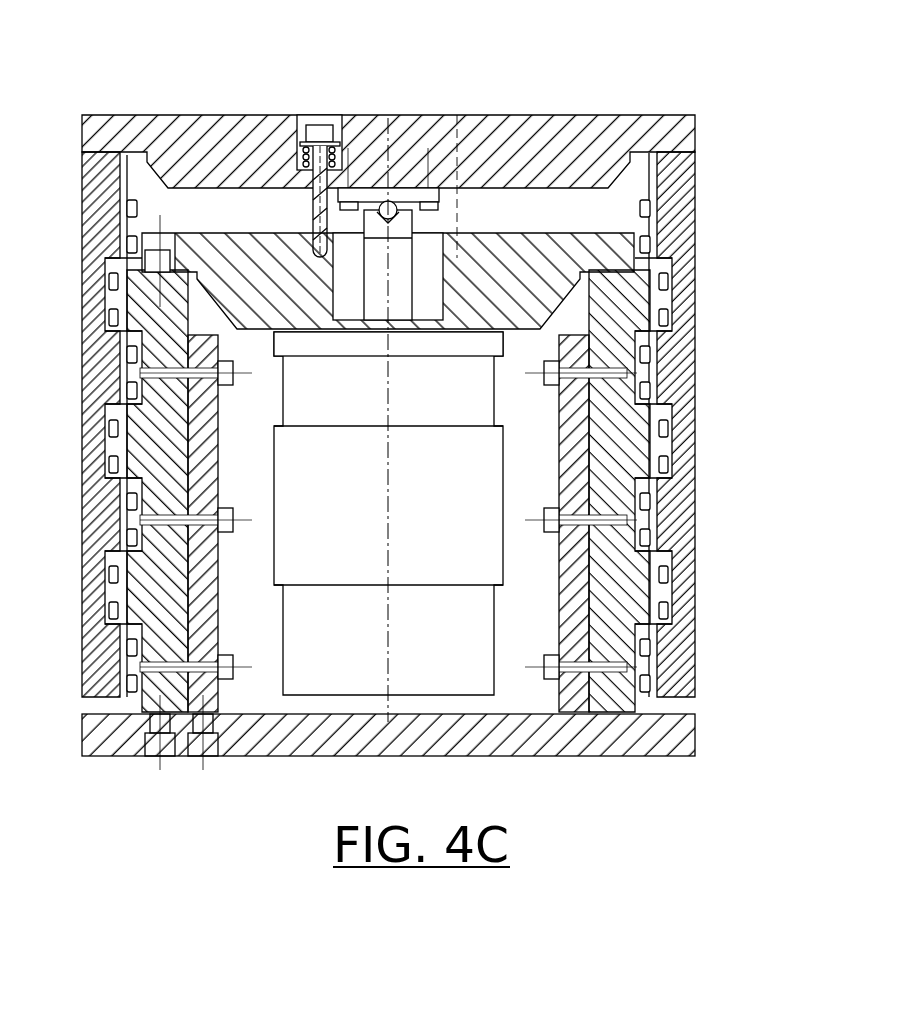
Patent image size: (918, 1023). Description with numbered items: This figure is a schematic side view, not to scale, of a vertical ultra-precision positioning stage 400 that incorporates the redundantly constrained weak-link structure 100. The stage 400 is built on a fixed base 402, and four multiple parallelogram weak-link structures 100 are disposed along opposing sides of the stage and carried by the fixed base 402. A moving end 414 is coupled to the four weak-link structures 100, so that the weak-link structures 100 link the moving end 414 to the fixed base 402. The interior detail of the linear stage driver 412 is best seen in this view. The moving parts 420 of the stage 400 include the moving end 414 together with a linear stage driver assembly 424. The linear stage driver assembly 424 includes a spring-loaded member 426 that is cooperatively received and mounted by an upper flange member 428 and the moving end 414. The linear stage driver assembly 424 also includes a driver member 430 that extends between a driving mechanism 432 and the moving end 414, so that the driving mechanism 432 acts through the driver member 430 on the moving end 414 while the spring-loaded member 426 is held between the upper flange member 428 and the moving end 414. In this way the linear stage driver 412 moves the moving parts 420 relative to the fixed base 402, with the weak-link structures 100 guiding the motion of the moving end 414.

The vertical ultra-precision positioning stage 400 is at (458, 411).
The moving end 414 is at (388, 113).
The spring-loaded member 426 is at (326, 190).
The moving parts 420 is at (508, 131).
The linear stage driver assembly 424 is at (450, 208).
The driver member 430 is at (408, 228).
The upper flange member 428 is at (610, 252).
The driving mechanism 432 is at (512, 337).
The linear stage driver 412 is at (534, 489).
The redundantly constrained weak-link structure 100 is at (668, 428).
The fixed base 402 is at (535, 733).